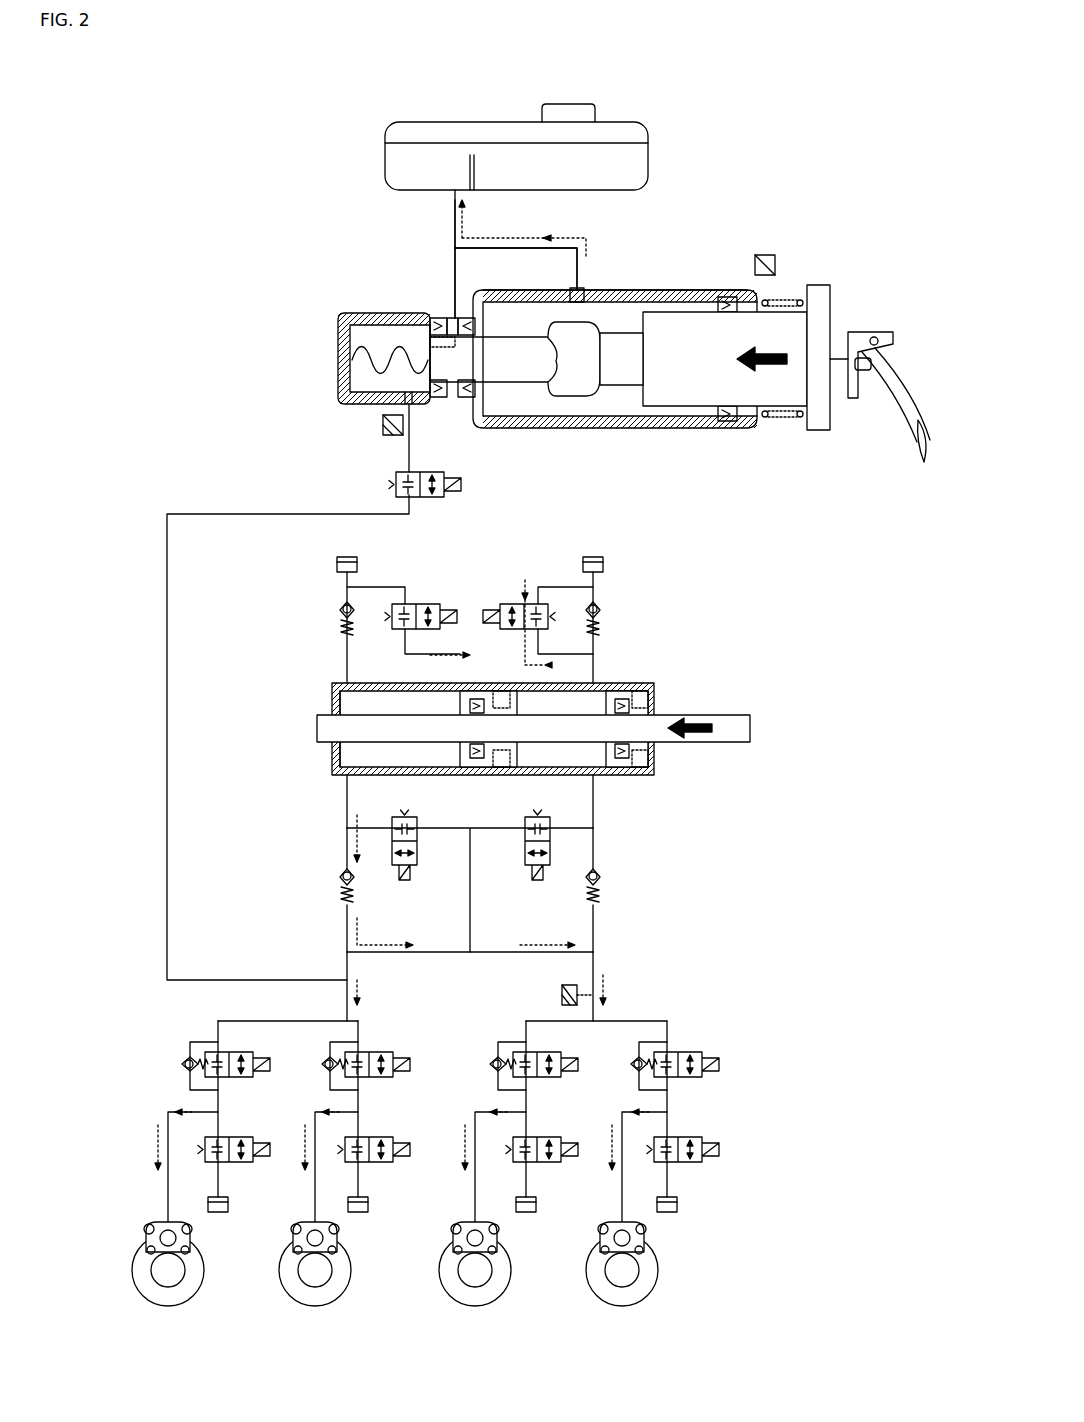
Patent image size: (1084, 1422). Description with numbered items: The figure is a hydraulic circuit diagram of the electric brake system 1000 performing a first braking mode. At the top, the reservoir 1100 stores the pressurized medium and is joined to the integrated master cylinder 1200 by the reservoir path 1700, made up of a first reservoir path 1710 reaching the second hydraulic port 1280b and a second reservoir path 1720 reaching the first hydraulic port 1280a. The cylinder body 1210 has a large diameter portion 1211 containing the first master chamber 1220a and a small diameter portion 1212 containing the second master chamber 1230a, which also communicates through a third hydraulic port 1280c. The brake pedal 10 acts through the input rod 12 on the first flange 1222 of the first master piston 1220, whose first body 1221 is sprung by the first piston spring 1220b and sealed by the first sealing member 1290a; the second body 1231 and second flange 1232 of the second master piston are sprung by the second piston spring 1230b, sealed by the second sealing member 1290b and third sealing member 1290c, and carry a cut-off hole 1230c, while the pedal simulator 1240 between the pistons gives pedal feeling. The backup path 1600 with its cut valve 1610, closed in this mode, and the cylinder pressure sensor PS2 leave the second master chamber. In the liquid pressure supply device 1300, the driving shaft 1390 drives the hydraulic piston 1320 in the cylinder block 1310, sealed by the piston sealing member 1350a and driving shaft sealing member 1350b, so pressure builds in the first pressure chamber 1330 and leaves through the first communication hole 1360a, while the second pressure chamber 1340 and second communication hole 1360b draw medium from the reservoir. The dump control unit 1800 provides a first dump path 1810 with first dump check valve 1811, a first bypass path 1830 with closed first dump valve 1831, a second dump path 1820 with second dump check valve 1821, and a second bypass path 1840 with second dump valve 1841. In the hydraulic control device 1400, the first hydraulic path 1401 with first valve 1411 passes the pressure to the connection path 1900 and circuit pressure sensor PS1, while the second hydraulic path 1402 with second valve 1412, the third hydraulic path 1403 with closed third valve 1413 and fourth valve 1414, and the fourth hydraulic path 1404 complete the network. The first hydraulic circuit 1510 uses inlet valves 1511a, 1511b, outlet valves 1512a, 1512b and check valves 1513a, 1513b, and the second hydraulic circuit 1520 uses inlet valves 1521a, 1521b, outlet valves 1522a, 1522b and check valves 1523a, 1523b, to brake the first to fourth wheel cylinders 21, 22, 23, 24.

The electric brake system 1000 is at (317, 81).
The reservoir 1100 is at (648, 152).
The reservoir path 1700 is at (372, 240).
The first reservoir path 1710 is at (453, 223).
The second reservoir path 1720 is at (565, 248).
The integrated master cylinder 1200 is at (306, 318).
The cylinder body 1210 is at (668, 428).
The large diameter portion 1211 is at (668, 288).
The small diameter portion 1212 is at (355, 312).
The first master piston 1220 is at (780, 292).
The first master chamber 1220a is at (592, 420).
The first piston spring 1220b is at (763, 422).
The first body 1221 is at (785, 292).
The first flange 1222 is at (814, 312).
The second master chamber 1230a is at (406, 406).
The second piston spring 1230b is at (365, 364).
The cut-off hole 1230c is at (470, 356).
The second body 1231 is at (458, 400).
The second flange 1232 is at (527, 393).
The pedal simulator 1240 is at (618, 320).
The first hydraulic port 1280a is at (576, 288).
The second hydraulic port 1280b is at (450, 314).
The third hydraulic port 1280c is at (441, 397).
The first sealing member 1290a is at (728, 297).
The second sealing member 1290b is at (464, 316).
The third sealing member 1290c is at (433, 315).
The input rod 12 is at (844, 361).
The brake pedal 10 is at (921, 450).
The cylinder pressure sensor PS2 is at (397, 436).
The liquid pressure supply device 1300 is at (443, 438).
The cylinder block 1310 is at (334, 768).
The hydraulic piston 1320 is at (462, 698).
The first pressure chamber 1330 is at (350, 699).
The second pressure chamber 1340 is at (603, 770).
The piston sealing member 1350a is at (501, 692).
The driving shaft sealing member 1350b is at (645, 688).
The first communication hole 1360a is at (376, 801).
The second communication hole 1360b is at (593, 780).
The driving shaft 1390 is at (752, 729).
The backup path 1600 is at (166, 585).
The cut valve 1610 is at (429, 498).
The dump control unit 1800 is at (655, 561).
The first dump path 1810 is at (347, 663).
The first dump check valve 1811 is at (342, 608).
The second dump path 1820 is at (593, 660).
The second dump check valve 1821 is at (598, 608).
The first bypass path 1830 is at (391, 588).
The first dump valve 1831 is at (432, 604).
The second bypass path 1840 is at (527, 586).
The second dump valve 1841 is at (508, 604).
The hydraulic control device 1400 is at (704, 838).
The first hydraulic path 1401 is at (347, 852).
The second hydraulic path 1402 is at (593, 852).
The third hydraulic path 1403 is at (451, 828).
The fourth hydraulic path 1404 is at (470, 946).
The first valve 1411 is at (340, 878).
The second valve 1412 is at (604, 878).
The third valve 1413 is at (419, 873).
The fourth valve 1414 is at (526, 873).
The connection path 1900 is at (598, 982).
The circuit pressure sensor PS1 is at (603, 996).
The first hydraulic circuit 1510 is at (720, 992).
The first inlet valve 1511a is at (688, 1052).
The second inlet valve 1511b is at (536, 1052).
The first outlet valve 1512a is at (688, 1137).
The second outlet valve 1512b is at (552, 1119).
The first check valve 1513a is at (634, 1062).
The second check valve 1513b is at (488, 1064).
The second hydraulic circuit 1520 is at (132, 1054).
The third inlet valve 1521a is at (383, 1052).
The fourth inlet valve 1521b is at (238, 1052).
The third outlet valve 1522a is at (380, 1137).
The fourth outlet valve 1522b is at (250, 1119).
The third check valve 1523a is at (324, 1062).
The fourth check valve 1523b is at (182, 1064).
The first wheel cylinder 21 is at (601, 1246).
The second wheel cylinder 22 is at (451, 1246).
The third wheel cylinder 23 is at (293, 1246).
The fourth wheel cylinder 24 is at (144, 1246).